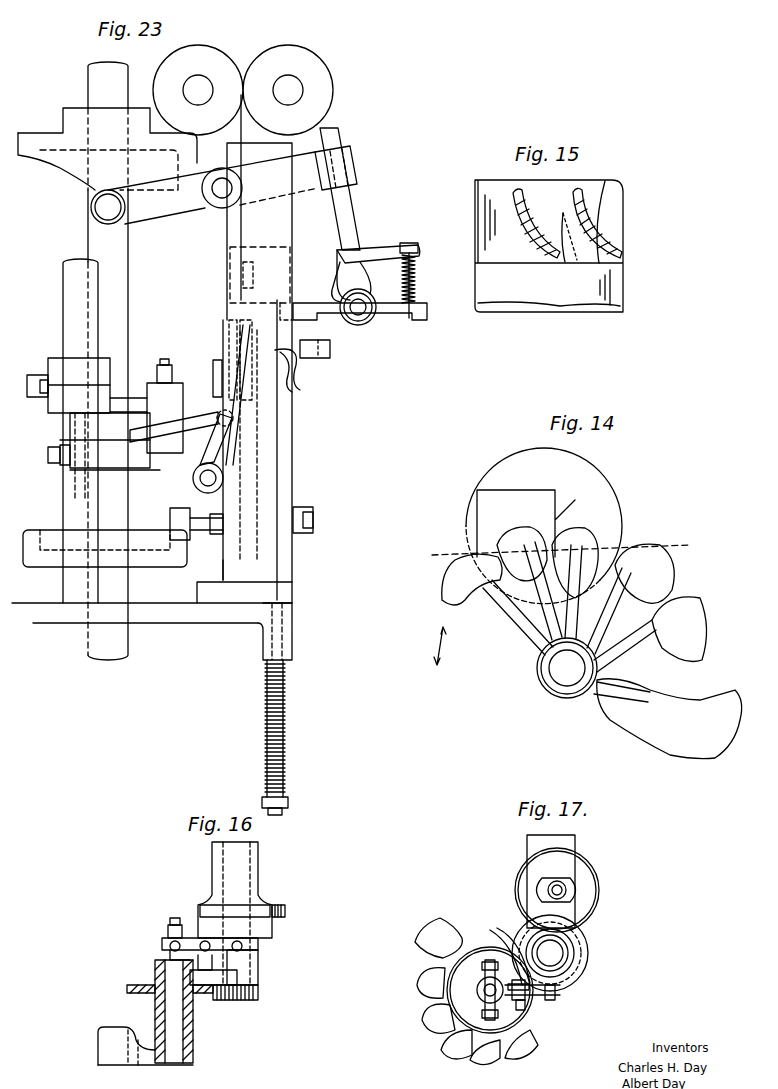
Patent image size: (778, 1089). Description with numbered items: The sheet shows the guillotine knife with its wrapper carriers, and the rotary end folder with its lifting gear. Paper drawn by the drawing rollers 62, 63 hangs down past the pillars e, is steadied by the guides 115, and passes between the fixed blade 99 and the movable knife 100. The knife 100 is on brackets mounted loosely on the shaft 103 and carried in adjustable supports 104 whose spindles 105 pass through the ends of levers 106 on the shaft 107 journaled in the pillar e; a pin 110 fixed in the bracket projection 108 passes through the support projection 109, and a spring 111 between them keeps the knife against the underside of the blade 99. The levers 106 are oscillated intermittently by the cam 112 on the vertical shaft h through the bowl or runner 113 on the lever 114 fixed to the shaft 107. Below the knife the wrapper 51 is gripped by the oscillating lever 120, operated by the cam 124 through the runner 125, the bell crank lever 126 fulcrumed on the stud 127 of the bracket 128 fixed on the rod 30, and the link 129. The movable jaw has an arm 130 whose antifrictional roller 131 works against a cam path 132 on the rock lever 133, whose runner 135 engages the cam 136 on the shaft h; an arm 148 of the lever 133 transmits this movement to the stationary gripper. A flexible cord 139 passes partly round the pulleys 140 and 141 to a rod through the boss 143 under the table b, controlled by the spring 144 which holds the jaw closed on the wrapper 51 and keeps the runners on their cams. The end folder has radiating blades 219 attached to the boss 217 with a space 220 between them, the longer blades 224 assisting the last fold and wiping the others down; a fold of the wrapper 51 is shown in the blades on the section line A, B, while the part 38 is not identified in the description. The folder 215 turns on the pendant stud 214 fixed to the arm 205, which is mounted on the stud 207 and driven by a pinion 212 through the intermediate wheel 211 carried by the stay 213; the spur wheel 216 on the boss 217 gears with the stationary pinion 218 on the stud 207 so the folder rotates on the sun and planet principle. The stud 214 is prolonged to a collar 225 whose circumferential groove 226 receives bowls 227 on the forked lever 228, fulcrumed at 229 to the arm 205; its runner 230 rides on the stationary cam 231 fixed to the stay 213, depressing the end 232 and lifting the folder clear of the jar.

In FIG. 23, the drawing roller 62 is at (208, 48).
In FIG. 23, the drawing roller 63 is at (318, 62).
In FIG. 23, the vertical shaft h is at (137, 642).
In FIG. 23, the rod 30 is at (63, 284).
In FIG. 23, the cam 112 is at (52, 158).
In FIG. 23, the bowl or runner 113 is at (106, 224).
In FIG. 23, the lever 114 is at (167, 208).
In FIG. 23, the shaft 107 is at (222, 190).
In FIG. 23, the pillars e is at (259, 373).
In FIG. 23, the levers 106 is at (352, 165).
In FIG. 23, the spindles 105 is at (353, 210).
In FIG. 23, the projection 109 is at (381, 262).
In FIG. 23, the pin 110 is at (409, 250).
In FIG. 23, the spring 111 is at (416, 275).
In FIG. 23, the projection 108 is at (398, 312).
In FIG. 23, the shaft 103 is at (358, 314).
In FIG. 23, the adjustable supports 104 is at (368, 318).
In FIG. 23, the guillotine blade 99 is at (232, 278).
In FIG. 23, the guides 115 is at (254, 271).
In FIG. 23, the guillotine knife 100 is at (282, 303).
In FIG. 23, the pulley 140 is at (300, 335).
In FIG. 23, the arm 148 is at (300, 380).
In FIG. 23, the pulley 141 is at (285, 375).
In FIG. 23, the antifrictional roller 131 is at (190, 346).
In FIG. 23, the arm 130 is at (207, 346).
In FIG. 23, the cam path 132 is at (196, 366).
In FIG. 23, the stud 127 is at (165, 375).
In FIG. 23, the bracket 128 is at (48, 362).
In FIG. 23, the bell crank lever 126 is at (70, 432).
In FIG. 23, the cam 124 is at (48, 455).
In FIG. 23, the runner 125 is at (58, 468).
In FIG. 23, the link 129 is at (174, 427).
In FIG. 23, the oscillating lever 120 is at (196, 452).
In FIG. 23, the flexible cord or wire 139 is at (280, 463).
In FIG. 23, the cam 136 is at (45, 540).
In FIG. 23, the runner 135 is at (178, 510).
In FIG. 23, the rock lever 133 is at (256, 530).
In FIG. 23, the table b is at (210, 618).
In FIG. 23, the boss 143 is at (293, 645).
In FIG. 23, the spring 144 is at (285, 720).
In FIG. 15, the wrapper 51 is at (638, 207).
In FIG. 14, the wrapper 51 is at (560, 535).
In FIG. 15, the radiating blades 219 is at (524, 206).
In FIG. 14, the radiating blades 219 is at (700, 611).
In FIG. 17, the radiating blades 219 is at (535, 1052).
In FIG. 15, the space 220 is at (572, 230).
In FIG. 14, the space 220 is at (690, 660).
In FIG. 14, the drum 38 is at (611, 500).
In FIG. 14, the section line A is at (548, 554).
In FIG. 14, the section line B is at (699, 545).
In FIG. 14, the stud 207 is at (562, 669).
In FIG. 16, the stud 207 is at (240, 845).
In FIG. 17, the stud 207 is at (556, 956).
In FIG. 14, the boss 217 is at (556, 706).
In FIG. 16, the boss 217 is at (194, 1025).
In FIG. 14, the blades 224 is at (669, 719).
In FIG. 17, the blades 224 is at (438, 938).
In FIG. 16, the stay 213 is at (258, 868).
In FIG. 17, the stay 213 is at (575, 843).
In FIG. 16, the pinion 212 is at (272, 903).
In FIG. 16, the intermediate wheel 211 is at (287, 911).
In FIG. 17, the intermediate wheel 211 is at (600, 890).
In FIG. 16, the stationary cam 231 is at (262, 942).
In FIG. 17, the stationary cam 231 is at (588, 950).
In FIG. 16, the end of lever 232 is at (245, 948).
In FIG. 17, the end of lever 232 is at (565, 1000).
In FIG. 16, the bowl or runner 230 is at (212, 948).
In FIG. 17, the bowl or runner 230 is at (560, 990).
In FIG. 16, the fulcrum 229 is at (214, 953).
In FIG. 17, the fulcrum 229 is at (545, 1005).
In FIG. 16, the arm 205 is at (252, 978).
In FIG. 17, the arm 205 is at (505, 955).
In FIG. 16, the stationary pinion 218 is at (262, 993).
In FIG. 16, the pendant stud 214 is at (178, 1066).
In FIG. 16, the top rotary folder 215 is at (98, 1038).
In FIG. 16, the spur wheel 216 is at (127, 988).
In FIG. 16, the collar 225 is at (170, 935).
In FIG. 16, the circumferential groove 226 is at (170, 946).
In FIG. 16, the forked lever 228 is at (205, 940).
In FIG. 17, the forked lever 228 is at (520, 1030).
In FIG. 17, the bowls or runners 227 is at (445, 1000).